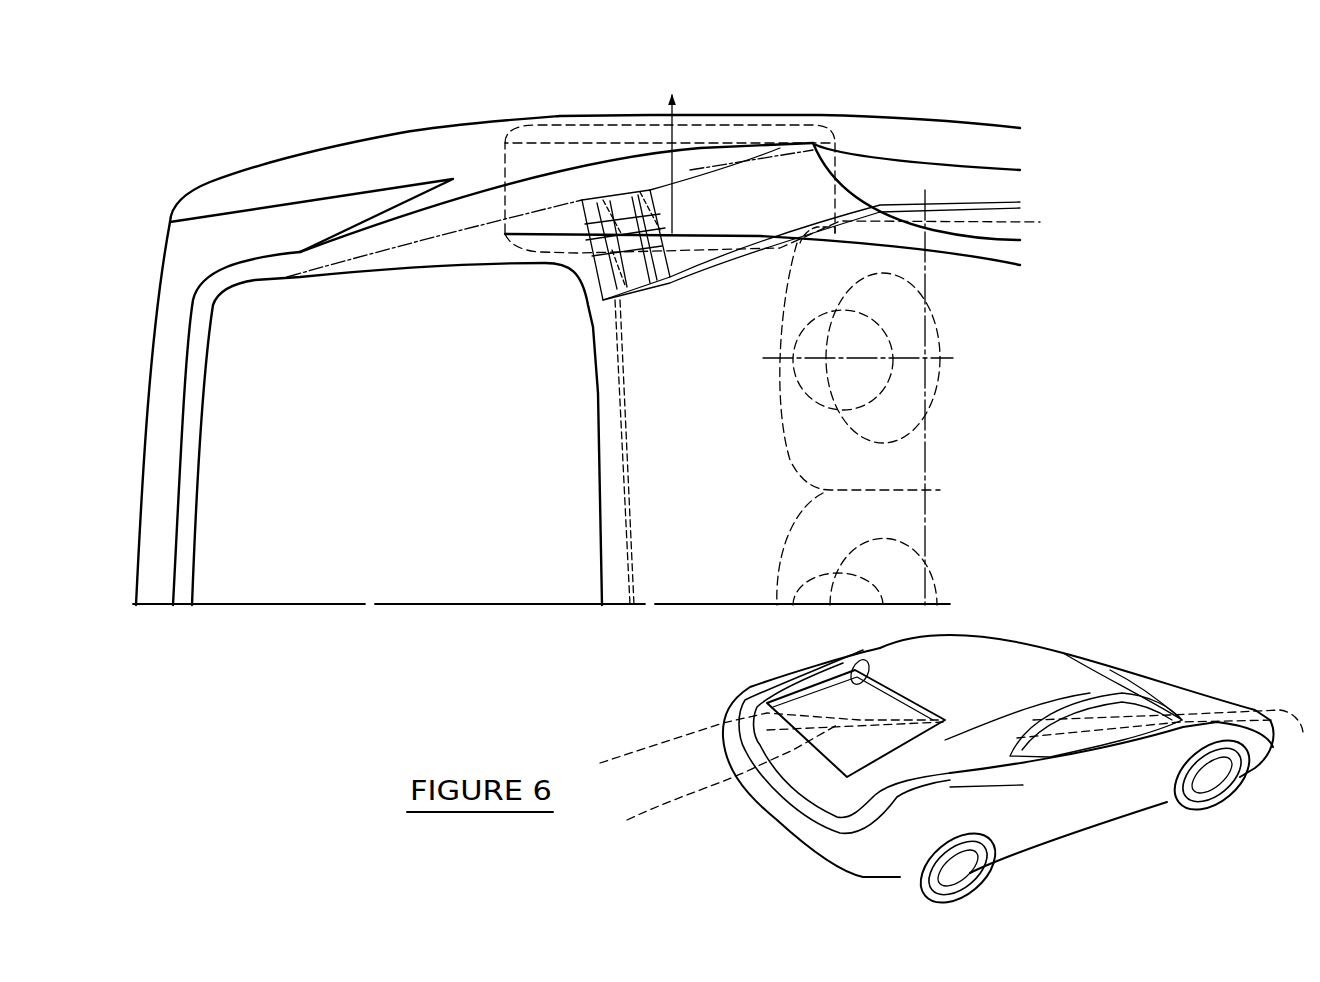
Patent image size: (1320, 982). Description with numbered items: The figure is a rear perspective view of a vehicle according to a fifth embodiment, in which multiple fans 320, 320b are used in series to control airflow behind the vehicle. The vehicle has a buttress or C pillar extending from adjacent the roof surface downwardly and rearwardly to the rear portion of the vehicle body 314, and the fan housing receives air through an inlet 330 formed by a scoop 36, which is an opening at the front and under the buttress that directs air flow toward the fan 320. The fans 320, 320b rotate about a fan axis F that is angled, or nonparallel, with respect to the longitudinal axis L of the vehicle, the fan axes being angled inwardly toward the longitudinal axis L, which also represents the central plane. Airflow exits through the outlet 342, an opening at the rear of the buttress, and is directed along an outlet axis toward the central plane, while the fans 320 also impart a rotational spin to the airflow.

The vehicle body outer panel 314 is at (168, 290).
The outlet 342 is at (535, 276).
The fan 320b is at (582, 198).
The fan 320 is at (626, 302).
The fan axis F is at (709, 220).
The scoop 36 is at (857, 184).
The inlet 330 is at (970, 222).
The longitudinal axis L is at (310, 607).